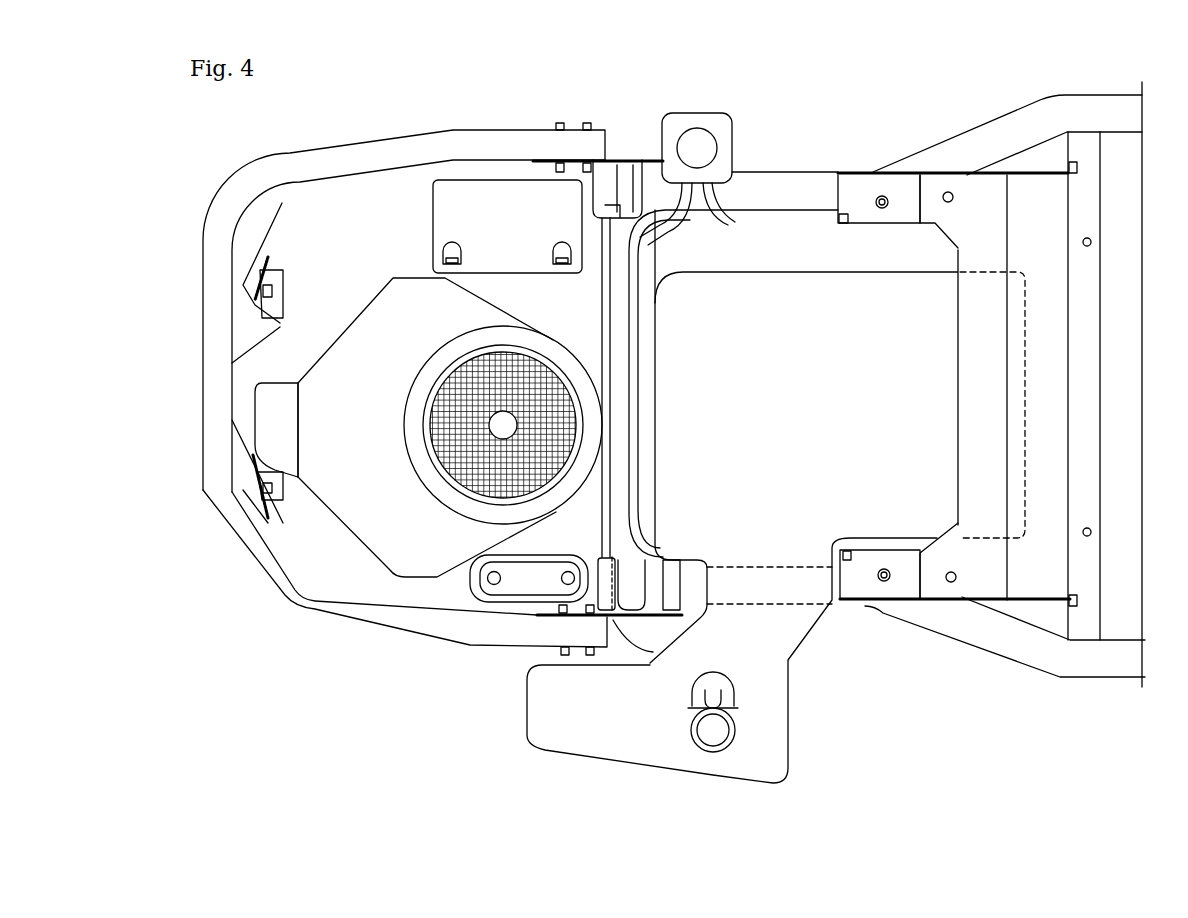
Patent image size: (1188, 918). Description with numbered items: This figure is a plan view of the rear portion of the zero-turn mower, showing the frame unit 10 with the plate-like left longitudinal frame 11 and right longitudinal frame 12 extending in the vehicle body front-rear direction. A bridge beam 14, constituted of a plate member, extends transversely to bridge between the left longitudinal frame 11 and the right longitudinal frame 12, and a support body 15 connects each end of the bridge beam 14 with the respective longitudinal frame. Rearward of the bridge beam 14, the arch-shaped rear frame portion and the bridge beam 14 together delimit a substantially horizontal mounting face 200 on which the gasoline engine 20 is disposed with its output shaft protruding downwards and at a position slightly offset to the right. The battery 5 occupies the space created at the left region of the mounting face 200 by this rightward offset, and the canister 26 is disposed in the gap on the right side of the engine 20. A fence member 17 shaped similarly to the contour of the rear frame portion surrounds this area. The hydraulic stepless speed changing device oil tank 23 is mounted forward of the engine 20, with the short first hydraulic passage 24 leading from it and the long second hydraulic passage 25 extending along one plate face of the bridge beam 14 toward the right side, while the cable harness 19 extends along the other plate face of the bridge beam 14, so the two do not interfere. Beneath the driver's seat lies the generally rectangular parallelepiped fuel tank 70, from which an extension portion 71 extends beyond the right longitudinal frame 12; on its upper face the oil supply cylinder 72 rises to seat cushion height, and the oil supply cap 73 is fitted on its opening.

The battery 5 is at (437, 216).
The frame unit 10 is at (1067, 93).
The left longitudinal frame 11 is at (943, 147).
The right longitudinal frame 12 is at (970, 623).
The bridge beam 14 is at (622, 486).
The support body 15 is at (597, 197).
The fence member 17 is at (245, 237).
The cable harness 19 is at (600, 302).
The engine 20 is at (272, 410).
The hydraulic stepless speed changing device oil tank 23 is at (700, 112).
The first hydraulic passage 24 is at (737, 222).
The second hydraulic passage 25 is at (640, 338).
The canister 26 is at (470, 585).
The fuel tank 70 is at (867, 290).
The extension portion 71 is at (535, 717).
The oil supply cylinder 72 is at (732, 689).
The oil supply cap 73 is at (713, 738).
The mounting face 200 is at (320, 578).